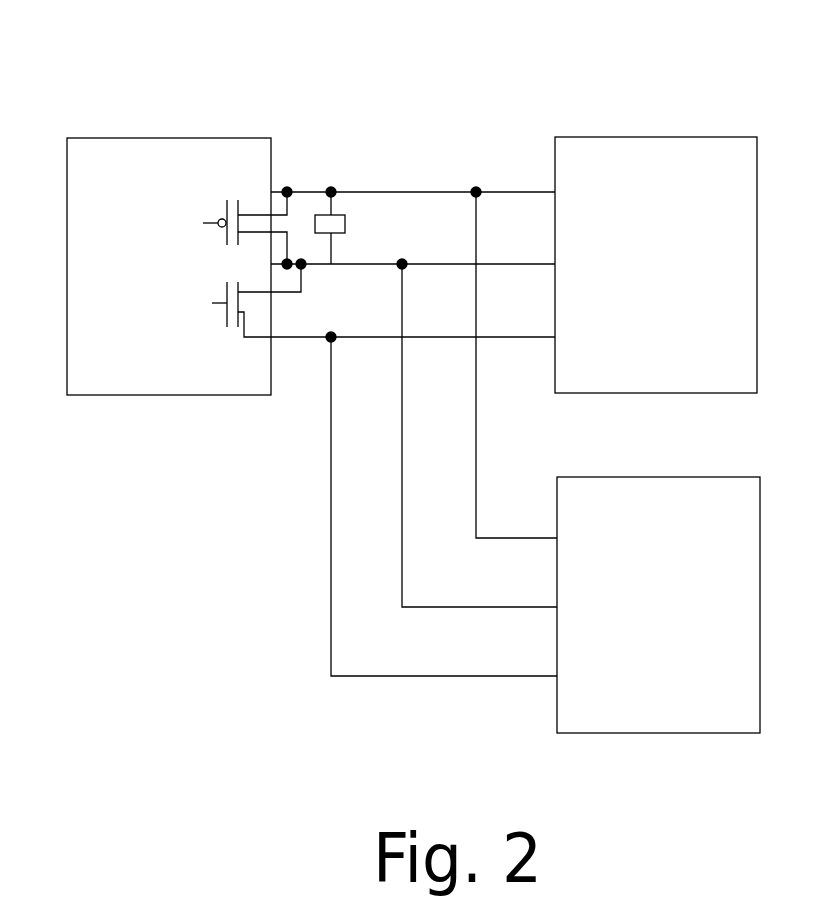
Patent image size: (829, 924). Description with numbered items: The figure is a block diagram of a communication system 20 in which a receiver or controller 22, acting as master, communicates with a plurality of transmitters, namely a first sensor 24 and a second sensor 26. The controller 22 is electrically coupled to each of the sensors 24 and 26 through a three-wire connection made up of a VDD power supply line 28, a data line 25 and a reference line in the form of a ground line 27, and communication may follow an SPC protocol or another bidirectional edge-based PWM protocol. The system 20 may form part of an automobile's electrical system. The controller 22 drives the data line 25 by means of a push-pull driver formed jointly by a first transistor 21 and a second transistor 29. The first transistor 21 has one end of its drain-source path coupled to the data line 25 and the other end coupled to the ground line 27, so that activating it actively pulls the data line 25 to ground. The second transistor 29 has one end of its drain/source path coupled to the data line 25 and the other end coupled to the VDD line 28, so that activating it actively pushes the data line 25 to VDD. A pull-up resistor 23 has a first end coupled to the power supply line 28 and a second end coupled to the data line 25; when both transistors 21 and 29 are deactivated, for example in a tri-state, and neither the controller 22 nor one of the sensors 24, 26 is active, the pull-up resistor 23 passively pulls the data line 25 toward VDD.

The system 20 is at (334, 76).
The first transistor 21 is at (227, 292).
The controller 22 is at (91, 138).
The pull-up resistor 23 is at (348, 233).
The first sensor 24 is at (646, 137).
The data line 25 is at (416, 264).
The second sensor 26 is at (600, 477).
The ground line 27 is at (412, 337).
The VDD power supply line 28 is at (300, 192).
The second transistor 29 is at (227, 209).